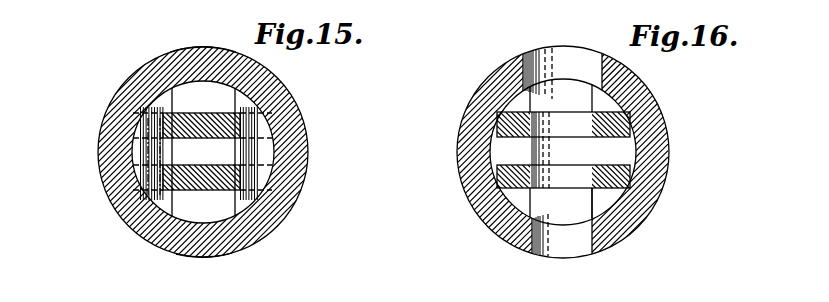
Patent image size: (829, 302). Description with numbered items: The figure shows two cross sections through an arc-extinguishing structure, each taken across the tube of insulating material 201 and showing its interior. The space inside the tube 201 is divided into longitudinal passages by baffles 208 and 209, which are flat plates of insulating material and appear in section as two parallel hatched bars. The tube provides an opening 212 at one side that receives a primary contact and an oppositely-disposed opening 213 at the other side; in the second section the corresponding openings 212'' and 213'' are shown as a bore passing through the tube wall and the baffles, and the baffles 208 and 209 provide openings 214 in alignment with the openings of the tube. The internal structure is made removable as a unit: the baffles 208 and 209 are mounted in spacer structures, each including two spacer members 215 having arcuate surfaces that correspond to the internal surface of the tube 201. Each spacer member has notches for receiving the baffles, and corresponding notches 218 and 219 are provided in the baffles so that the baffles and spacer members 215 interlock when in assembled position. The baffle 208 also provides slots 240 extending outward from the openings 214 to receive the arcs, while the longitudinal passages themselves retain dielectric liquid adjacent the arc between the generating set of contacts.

In FIG. 15, the tube of insulating material 201 is at (133, 80).
In FIG. 16, the tube of insulating material 201 is at (487, 90).
In FIG. 15, the baffle 208 is at (242, 117).
In FIG. 16, the baffle 208 is at (610, 128).
In FIG. 15, the baffle 209 is at (237, 178).
In FIG. 16, the baffle 209 is at (565, 177).
In FIG. 15, the opening 212 is at (202, 37).
In FIG. 15, the opening 213 is at (230, 267).
In FIG. 15, the spacer member 215 is at (145, 155).
In FIG. 15, the notch 218 is at (197, 110).
In FIG. 16, the notch 218 is at (523, 128).
In FIG. 15, the notch 219 is at (187, 192).
In FIG. 16, the notch 219 is at (557, 180).
In FIG. 15, the slot 240 is at (150, 128).
In FIG. 16, the opening 212'' is at (538, 65).
In FIG. 16, the opening 213'' is at (541, 255).
In FIG. 16, the opening 214 is at (593, 188).